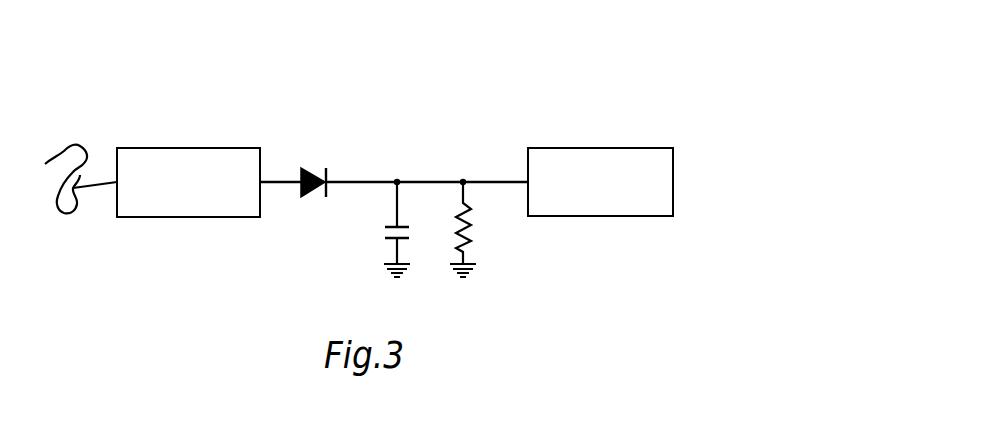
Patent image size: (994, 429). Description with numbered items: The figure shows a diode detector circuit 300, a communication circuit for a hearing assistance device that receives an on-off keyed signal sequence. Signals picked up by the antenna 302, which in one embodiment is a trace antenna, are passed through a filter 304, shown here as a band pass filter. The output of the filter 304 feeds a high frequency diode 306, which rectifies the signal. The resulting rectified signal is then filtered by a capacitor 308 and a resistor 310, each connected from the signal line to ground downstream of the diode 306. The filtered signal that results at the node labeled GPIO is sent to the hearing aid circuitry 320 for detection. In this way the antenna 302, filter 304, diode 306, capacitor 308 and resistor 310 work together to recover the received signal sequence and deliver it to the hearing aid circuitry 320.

The diode detector circuit 300 is at (590, 43).
The antenna 302 is at (73, 145).
The filter 304 is at (190, 148).
The high frequency diode 306 is at (308, 168).
The capacitor 308 is at (395, 225).
The resistor 310 is at (472, 228).
The hearing aid circuitry 320 is at (601, 148).